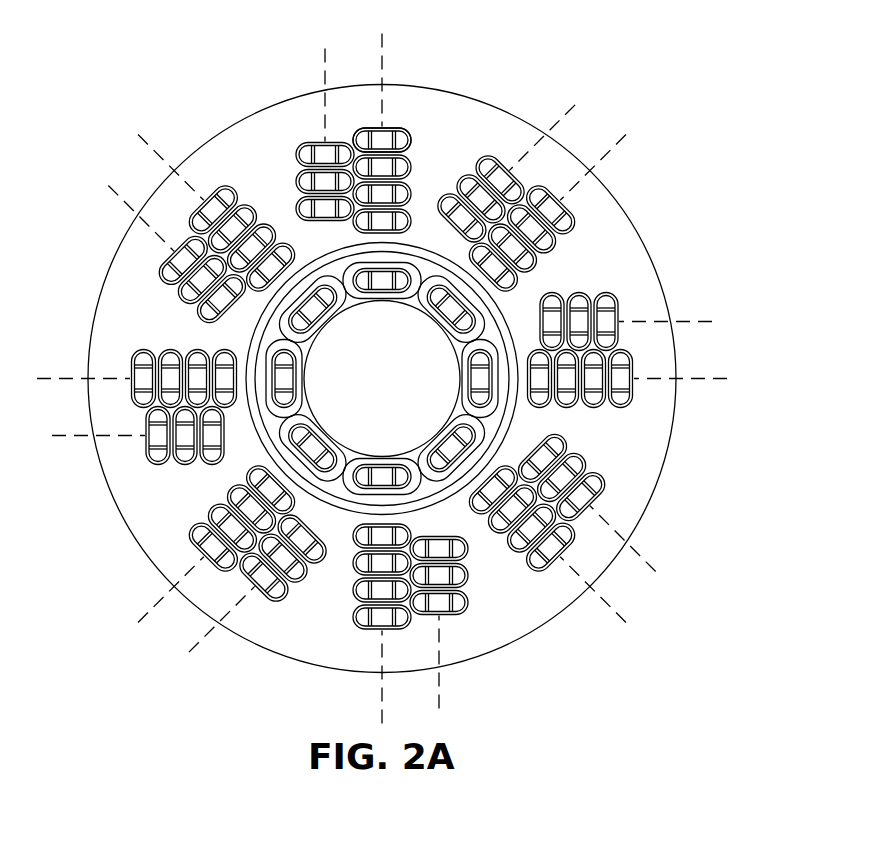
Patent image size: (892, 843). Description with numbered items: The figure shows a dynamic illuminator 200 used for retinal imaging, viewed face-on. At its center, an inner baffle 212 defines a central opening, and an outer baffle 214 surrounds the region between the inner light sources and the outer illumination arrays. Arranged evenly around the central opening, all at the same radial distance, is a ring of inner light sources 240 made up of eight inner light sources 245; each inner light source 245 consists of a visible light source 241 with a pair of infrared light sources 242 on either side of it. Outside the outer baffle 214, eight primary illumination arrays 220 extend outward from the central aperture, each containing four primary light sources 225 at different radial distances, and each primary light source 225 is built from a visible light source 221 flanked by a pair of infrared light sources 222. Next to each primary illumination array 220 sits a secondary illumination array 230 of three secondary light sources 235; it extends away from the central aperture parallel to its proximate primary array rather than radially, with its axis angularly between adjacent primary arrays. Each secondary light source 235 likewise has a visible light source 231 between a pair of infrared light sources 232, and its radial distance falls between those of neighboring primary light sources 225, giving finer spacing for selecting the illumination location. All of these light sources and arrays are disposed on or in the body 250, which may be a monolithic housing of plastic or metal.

The dynamic illuminator 200 is at (152, 88).
The inner baffle 212 is at (423, 447).
The outer baffle 214 is at (330, 487).
The primary illumination array 220 is at (393, 120).
The visible light source 221 is at (376, 127).
The infrared light source 222 is at (362, 127).
The primary light source 225 is at (414, 138).
The secondary illumination array 230 is at (162, 248).
The visible light source 231 is at (177, 252).
The infrared light source 232 is at (187, 253).
The secondary light source 235 is at (157, 283).
The ring of inner light sources 240 is at (303, 375).
The visible light source 241 is at (463, 373).
The infrared light source 242 is at (462, 358).
The inner light source 245 is at (297, 350).
The body 250 is at (620, 262).